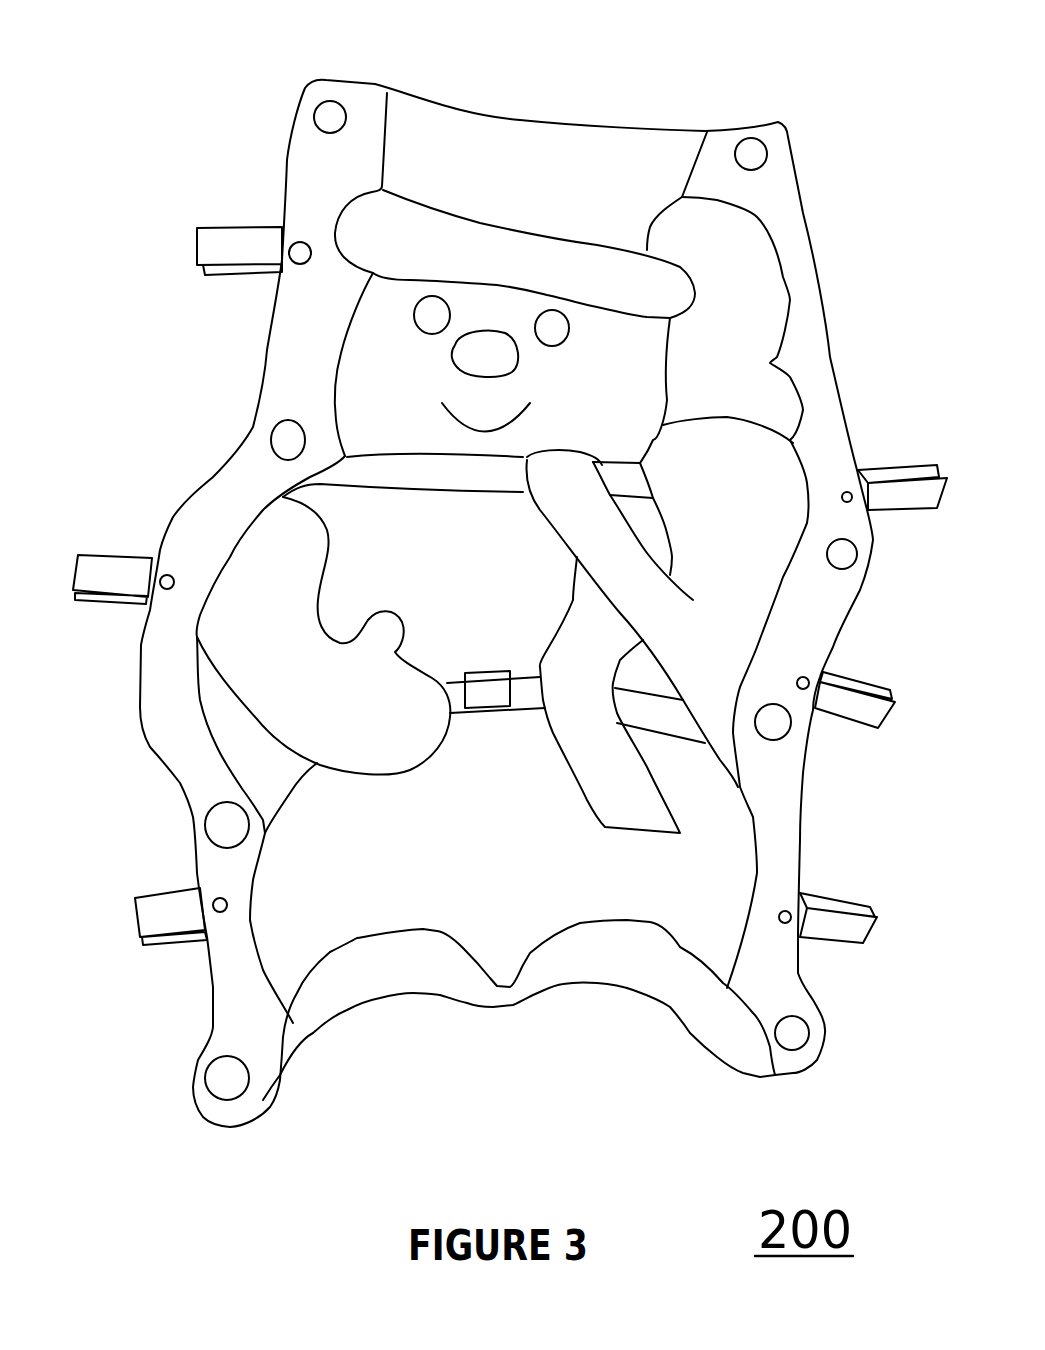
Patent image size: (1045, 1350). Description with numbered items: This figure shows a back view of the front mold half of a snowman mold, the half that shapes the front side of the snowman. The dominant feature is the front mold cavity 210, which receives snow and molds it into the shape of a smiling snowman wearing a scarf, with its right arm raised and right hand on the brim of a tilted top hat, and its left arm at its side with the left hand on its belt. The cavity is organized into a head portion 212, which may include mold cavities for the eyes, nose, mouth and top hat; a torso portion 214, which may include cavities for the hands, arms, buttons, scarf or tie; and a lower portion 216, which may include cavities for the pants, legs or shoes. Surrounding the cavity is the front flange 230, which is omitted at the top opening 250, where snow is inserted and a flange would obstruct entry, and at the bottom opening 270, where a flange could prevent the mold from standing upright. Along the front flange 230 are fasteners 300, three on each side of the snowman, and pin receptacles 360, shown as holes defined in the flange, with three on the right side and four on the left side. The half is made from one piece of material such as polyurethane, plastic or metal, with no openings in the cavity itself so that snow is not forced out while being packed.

The front mold cavity 210 is at (258, 965).
The head portion 212 is at (330, 350).
The torso portion 214 is at (195, 700).
The lower portion 216 is at (760, 860).
The front flange 230 is at (283, 167).
The top opening 250 is at (478, 82).
The bottom opening 270 is at (417, 1027).
The fasteners 300 is at (898, 458).
The pin receptacles 360 is at (858, 555).